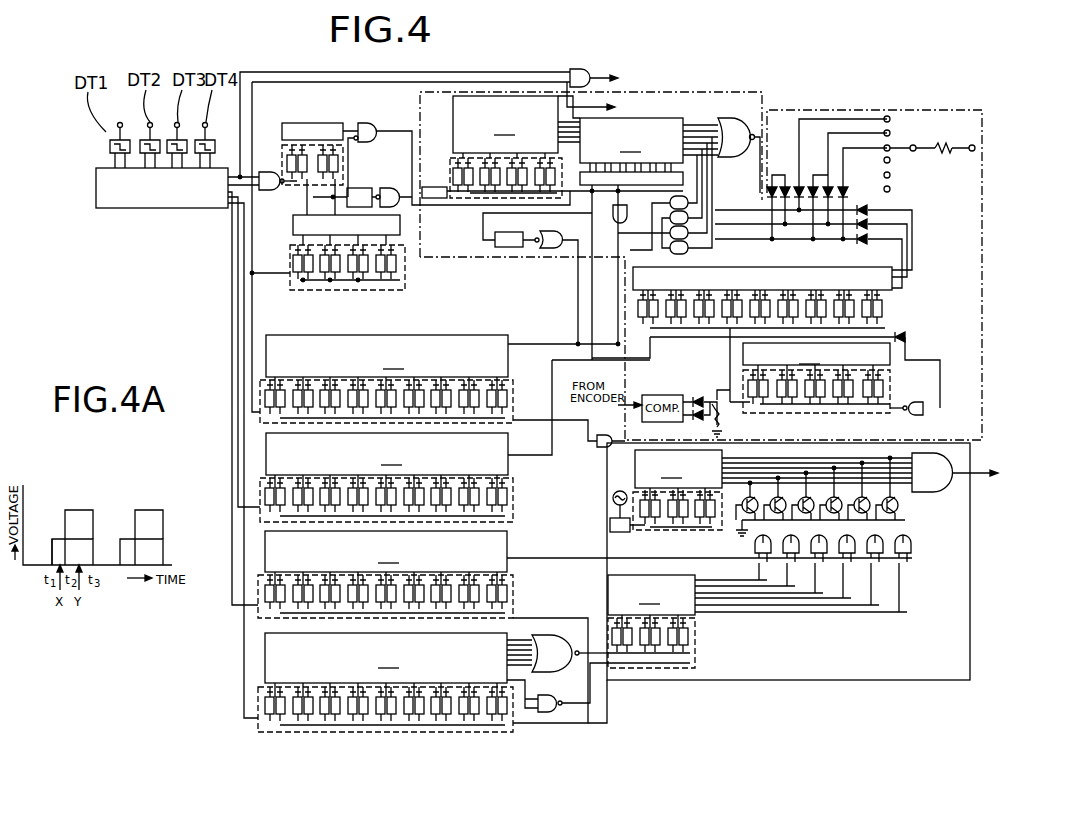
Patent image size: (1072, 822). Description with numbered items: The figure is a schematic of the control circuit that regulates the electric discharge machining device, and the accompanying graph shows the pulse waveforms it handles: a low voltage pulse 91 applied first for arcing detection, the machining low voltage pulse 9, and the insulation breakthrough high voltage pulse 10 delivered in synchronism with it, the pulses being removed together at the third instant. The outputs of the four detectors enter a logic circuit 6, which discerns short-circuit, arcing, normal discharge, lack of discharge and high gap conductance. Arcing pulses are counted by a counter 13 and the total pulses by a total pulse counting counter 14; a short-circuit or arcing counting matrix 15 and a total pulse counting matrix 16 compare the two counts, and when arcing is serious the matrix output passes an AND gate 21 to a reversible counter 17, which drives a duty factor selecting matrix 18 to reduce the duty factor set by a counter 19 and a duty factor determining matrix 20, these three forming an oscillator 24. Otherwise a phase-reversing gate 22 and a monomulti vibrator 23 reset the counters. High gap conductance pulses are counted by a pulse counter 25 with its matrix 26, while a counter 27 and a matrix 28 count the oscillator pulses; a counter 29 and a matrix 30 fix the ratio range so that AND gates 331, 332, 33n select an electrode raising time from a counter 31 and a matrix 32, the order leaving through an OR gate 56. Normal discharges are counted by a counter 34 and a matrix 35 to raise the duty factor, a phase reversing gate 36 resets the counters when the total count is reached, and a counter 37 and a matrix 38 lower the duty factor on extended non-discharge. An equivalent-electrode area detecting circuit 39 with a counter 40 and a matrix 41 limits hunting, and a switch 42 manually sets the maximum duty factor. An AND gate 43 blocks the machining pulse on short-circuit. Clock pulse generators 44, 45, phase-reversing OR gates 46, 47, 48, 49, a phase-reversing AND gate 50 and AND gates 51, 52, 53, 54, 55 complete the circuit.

In FIG. 4, the logic circuit 6 is at (166, 198).
In FIG. 4, the counter 13 is at (282, 150).
In FIG. 4, the total pulse counting counter 14 is at (322, 292).
In FIG. 4, the short-circuit or arcing counting matrix 15 is at (298, 122).
In FIG. 4, the total pulse counting matrix 16 is at (302, 222).
In FIG. 4, the reversible counter 17 is at (565, 182).
In FIG. 4, the duty factor selecting matrix 18 is at (649, 145).
In FIG. 4, the counter 19 is at (450, 172).
In FIG. 4, the duty factor determining matrix 20 is at (516, 124).
In FIG. 4, the AND gate 21 is at (366, 121).
In FIG. 4, the phase-reversing gate 22 is at (390, 186).
In FIG. 4, the monomulti vibrator 23 is at (356, 186).
In FIG. 4, the oscillator 24 is at (724, 92).
In FIG. 4, the pulse counter 25 is at (513, 593).
In FIG. 4, the matrix 26 is at (588, 551).
In FIG. 4, the counter 27 is at (505, 733).
In FIG. 4, the matrix 28 is at (398, 658).
In FIG. 4, the counter 29 is at (695, 640).
In FIG. 4, the matrix 30 is at (651, 595).
In FIG. 4, the counter 31 is at (663, 530).
In FIG. 4, the matrix 32 is at (773, 469).
In FIG. 4, the AND gate 331 is at (755, 545).
In FIG. 4, the AND gate 332 is at (788, 556).
In FIG. 4, the AND gate 33n is at (912, 545).
In FIG. 4, the counter 34 is at (513, 400).
In FIG. 4, the matrix 35 is at (387, 356).
In FIG. 4, the phase reversing gate 36 is at (556, 699).
In FIG. 4, the counter 37 is at (513, 498).
In FIG. 4, the matrix 38 is at (387, 454).
In FIG. 4, the equivalent-electrode area detecting circuit 39 is at (872, 110).
In FIG. 4, the counter 40 is at (892, 386).
In FIG. 4, the matrix 41 is at (816, 354).
In FIG. 4, the switch 42 is at (878, 262).
In FIG. 4, the AND gate 43 is at (578, 68).
In FIG. 4, the clock pulse generator 44 is at (616, 532).
In FIG. 4, the clock pulse generator 45 is at (433, 199).
In FIG. 4, the phase-reversing OR gate 46 is at (267, 191).
In FIG. 4, the phase-reversing OR gate 47 is at (552, 249).
In FIG. 4, the phase-reversing OR gate 48 is at (556, 640).
In FIG. 4, the phase-reversing OR gate 49 is at (737, 117).
In FIG. 4, the phase-reversing AND gate 50 is at (918, 414).
In FIG. 4, the AND gate 51 is at (628, 213).
In FIG. 4, the AND gate 52 is at (663, 202).
In FIG. 4, the AND gate 53 is at (682, 198).
In FIG. 4, the AND gate 54 is at (662, 191).
In FIG. 4, the AND gate 55 is at (691, 195).
In FIG. 4, the OR gate 56 is at (930, 490).
In FIG. 4A, the machining low voltage pulse 9 is at (88, 539).
In FIG. 4A, the low voltage pulse 91 is at (51, 539).
In FIG. 4A, the insulation breakthrough high voltage pulse 10 is at (80, 510).